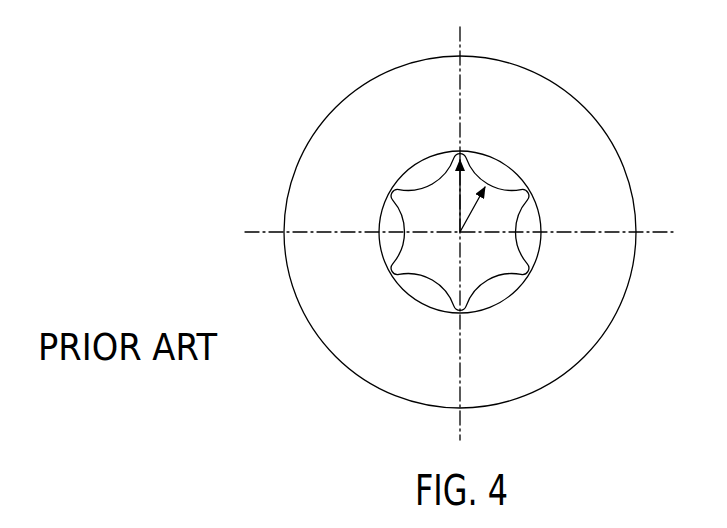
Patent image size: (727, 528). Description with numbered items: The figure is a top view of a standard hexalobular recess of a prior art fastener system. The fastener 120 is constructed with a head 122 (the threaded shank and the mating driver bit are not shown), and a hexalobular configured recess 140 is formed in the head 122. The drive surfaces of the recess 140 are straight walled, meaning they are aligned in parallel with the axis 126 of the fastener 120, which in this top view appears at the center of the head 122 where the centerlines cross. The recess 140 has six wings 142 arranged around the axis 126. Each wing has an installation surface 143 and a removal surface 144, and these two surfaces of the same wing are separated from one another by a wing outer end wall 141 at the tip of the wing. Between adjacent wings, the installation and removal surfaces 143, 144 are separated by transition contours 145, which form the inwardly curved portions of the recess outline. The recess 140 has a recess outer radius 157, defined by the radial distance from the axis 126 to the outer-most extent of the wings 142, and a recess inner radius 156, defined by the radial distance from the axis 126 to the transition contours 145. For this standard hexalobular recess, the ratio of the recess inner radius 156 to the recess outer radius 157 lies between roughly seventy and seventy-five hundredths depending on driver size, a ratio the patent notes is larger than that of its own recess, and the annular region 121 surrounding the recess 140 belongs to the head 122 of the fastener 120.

The fastener 120 is at (550, 108).
The annular body portion 121 is at (603, 213).
The head 122 is at (367, 357).
The axis 126 is at (460, 232).
The recess 140 is at (420, 204).
The wing outer end wall 141 is at (470, 155).
The wings 142 is at (507, 198).
The installation surface 143 is at (530, 210).
The removal surface 144 is at (518, 246).
The transition contours 145 is at (511, 243).
The recess inner radius 156 is at (517, 219).
The recess outer radius 157 is at (462, 201).